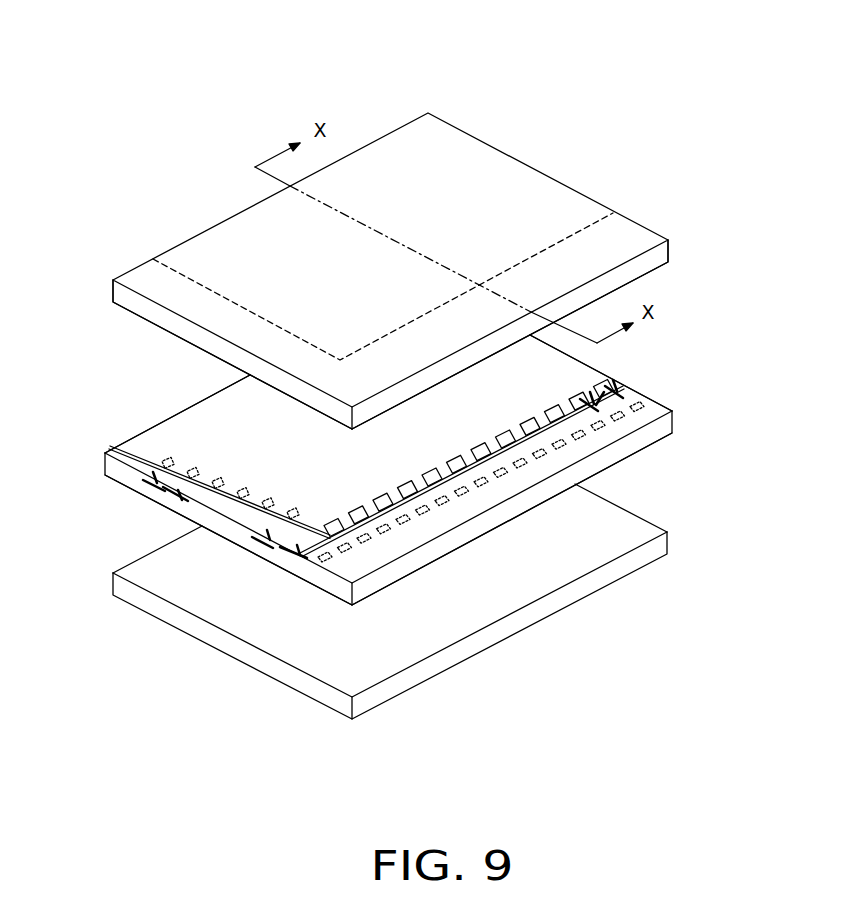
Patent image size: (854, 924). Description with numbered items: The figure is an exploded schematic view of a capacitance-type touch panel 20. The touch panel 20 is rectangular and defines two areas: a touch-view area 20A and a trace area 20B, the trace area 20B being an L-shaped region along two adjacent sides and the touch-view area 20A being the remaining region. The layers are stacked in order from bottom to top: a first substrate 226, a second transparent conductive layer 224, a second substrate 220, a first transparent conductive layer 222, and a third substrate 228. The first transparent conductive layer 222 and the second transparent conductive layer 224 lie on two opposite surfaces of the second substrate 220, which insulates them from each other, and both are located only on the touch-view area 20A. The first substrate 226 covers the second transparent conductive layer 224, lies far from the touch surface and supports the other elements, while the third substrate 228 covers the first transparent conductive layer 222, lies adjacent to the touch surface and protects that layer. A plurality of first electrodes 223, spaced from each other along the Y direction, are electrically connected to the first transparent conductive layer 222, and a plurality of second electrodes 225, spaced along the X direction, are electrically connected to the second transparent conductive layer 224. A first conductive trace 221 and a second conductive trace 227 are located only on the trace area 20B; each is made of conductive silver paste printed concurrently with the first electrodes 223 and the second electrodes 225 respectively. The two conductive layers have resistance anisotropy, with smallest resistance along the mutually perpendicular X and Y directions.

The touch panel 20 is at (390, 214).
The touch-view area 20A is at (490, 187).
The trace area 20B is at (623, 250).
The third substrate 228 is at (130, 280).
The second substrate 220 is at (662, 428).
The first transparent conductive layer 222 is at (212, 420).
The first conductive trace 221 is at (615, 402).
The first electrodes 223 is at (610, 375).
The second transparent conductive layer 224 is at (367, 590).
The second electrodes 225 is at (326, 565).
The second conductive trace 227 is at (272, 560).
The first substrate 226 is at (655, 548).